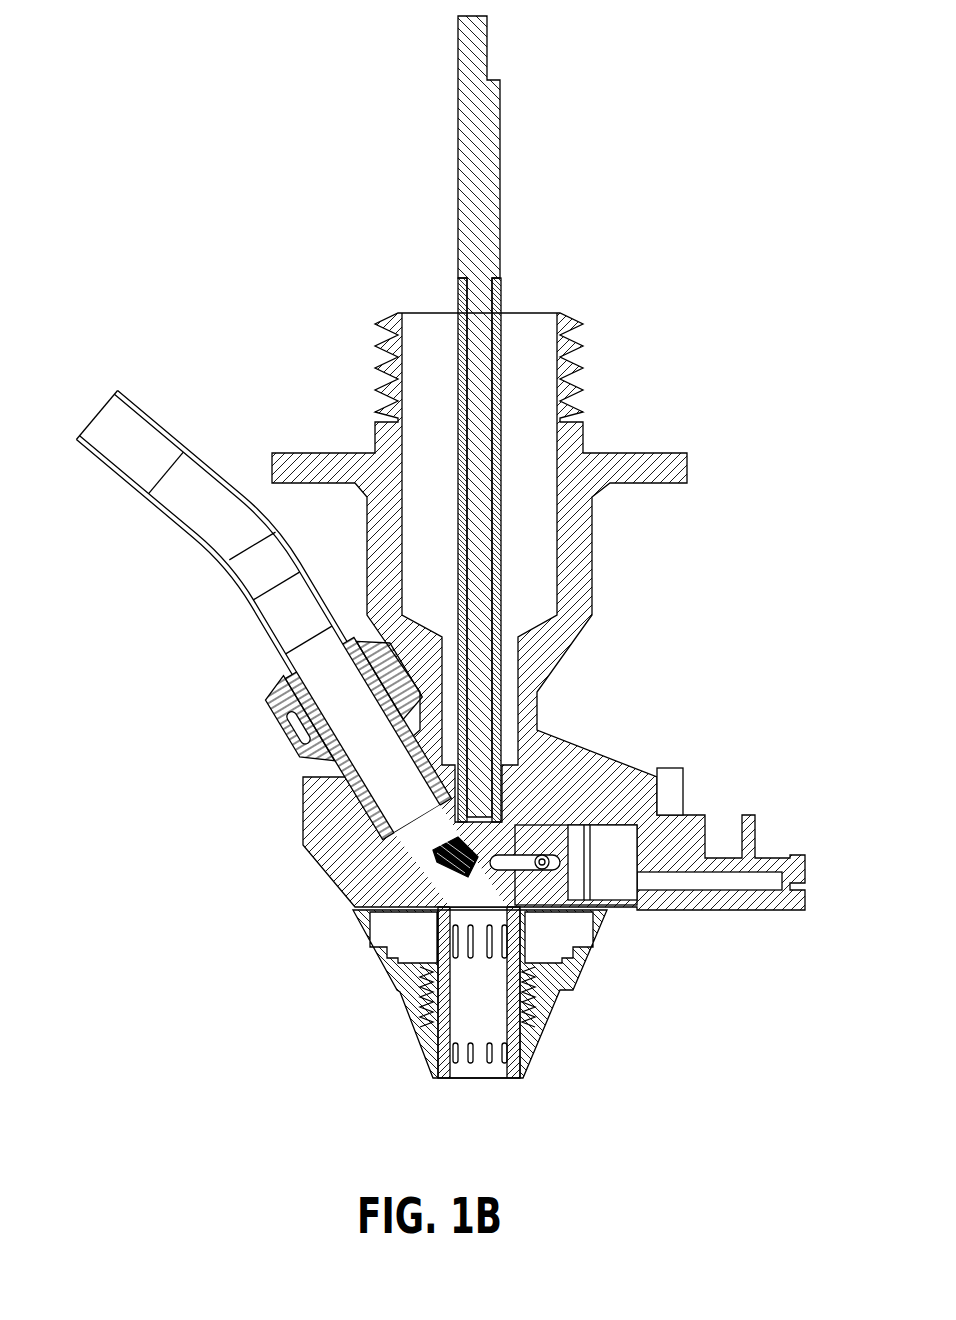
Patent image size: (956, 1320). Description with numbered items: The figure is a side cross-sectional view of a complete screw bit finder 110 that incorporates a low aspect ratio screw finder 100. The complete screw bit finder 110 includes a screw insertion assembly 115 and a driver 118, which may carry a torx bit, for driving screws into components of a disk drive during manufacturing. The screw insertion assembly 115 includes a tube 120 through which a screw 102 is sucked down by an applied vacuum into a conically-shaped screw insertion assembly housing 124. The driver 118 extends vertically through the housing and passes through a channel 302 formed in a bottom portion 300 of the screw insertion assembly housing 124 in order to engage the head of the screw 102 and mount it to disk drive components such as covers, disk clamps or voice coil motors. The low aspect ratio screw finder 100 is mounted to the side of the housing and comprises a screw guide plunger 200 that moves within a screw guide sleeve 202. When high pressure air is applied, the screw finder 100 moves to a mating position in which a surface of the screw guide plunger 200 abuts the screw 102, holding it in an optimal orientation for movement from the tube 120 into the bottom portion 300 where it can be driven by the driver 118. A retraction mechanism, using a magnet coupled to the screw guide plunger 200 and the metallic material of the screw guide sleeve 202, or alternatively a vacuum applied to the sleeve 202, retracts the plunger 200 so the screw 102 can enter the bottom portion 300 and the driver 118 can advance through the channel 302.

The low aspect ratio screw finder 100 is at (446, 551).
The screw 102 is at (427, 842).
The complete screw bit finder 110 is at (254, 595).
The screw insertion assembly 115 is at (320, 746).
The driver 118 is at (497, 118).
The tube 120 is at (142, 488).
The screw insertion assembly housing 124 is at (303, 805).
The screw guide plunger 200 is at (547, 910).
The screw guide sleeve 202 is at (667, 833).
The bottom portion 300 is at (450, 996).
The channel 302 is at (465, 1032).